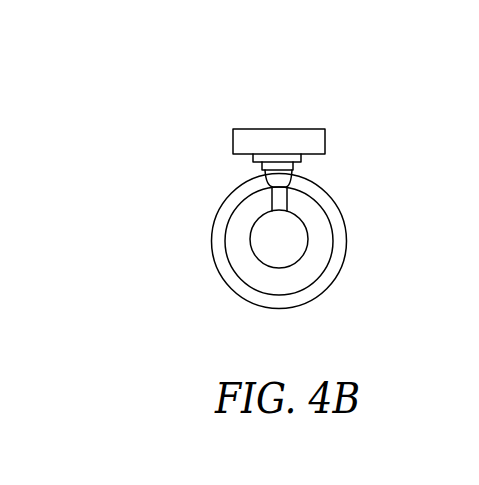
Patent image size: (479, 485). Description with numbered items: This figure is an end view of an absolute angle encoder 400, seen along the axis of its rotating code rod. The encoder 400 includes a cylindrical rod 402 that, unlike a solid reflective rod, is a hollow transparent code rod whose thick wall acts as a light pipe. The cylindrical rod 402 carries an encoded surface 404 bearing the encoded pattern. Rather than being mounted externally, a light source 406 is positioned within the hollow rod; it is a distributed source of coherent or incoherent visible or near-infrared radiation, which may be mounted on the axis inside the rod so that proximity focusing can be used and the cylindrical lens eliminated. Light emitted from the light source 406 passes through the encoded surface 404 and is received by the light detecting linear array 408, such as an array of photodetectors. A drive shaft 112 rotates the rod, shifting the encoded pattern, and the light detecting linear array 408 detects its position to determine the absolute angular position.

The absolute angle encoder 400 is at (368, 90).
The cylindrical rod 402 is at (325, 252).
The encoded surface 404 is at (228, 285).
The light source 406 is at (287, 200).
The light detecting linear array 408 is at (293, 128).
The drive shaft 112 is at (250, 238).